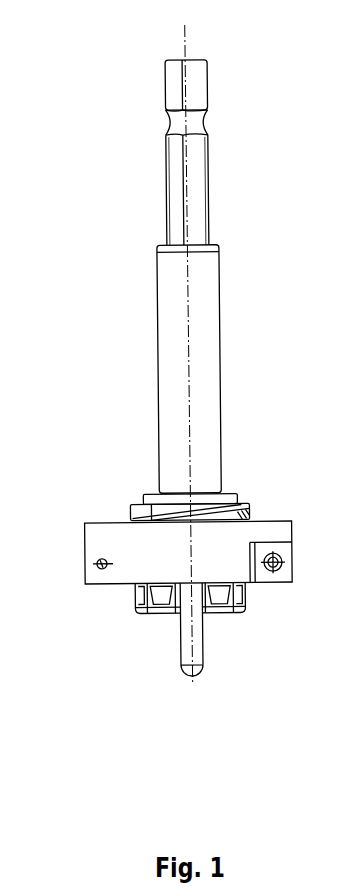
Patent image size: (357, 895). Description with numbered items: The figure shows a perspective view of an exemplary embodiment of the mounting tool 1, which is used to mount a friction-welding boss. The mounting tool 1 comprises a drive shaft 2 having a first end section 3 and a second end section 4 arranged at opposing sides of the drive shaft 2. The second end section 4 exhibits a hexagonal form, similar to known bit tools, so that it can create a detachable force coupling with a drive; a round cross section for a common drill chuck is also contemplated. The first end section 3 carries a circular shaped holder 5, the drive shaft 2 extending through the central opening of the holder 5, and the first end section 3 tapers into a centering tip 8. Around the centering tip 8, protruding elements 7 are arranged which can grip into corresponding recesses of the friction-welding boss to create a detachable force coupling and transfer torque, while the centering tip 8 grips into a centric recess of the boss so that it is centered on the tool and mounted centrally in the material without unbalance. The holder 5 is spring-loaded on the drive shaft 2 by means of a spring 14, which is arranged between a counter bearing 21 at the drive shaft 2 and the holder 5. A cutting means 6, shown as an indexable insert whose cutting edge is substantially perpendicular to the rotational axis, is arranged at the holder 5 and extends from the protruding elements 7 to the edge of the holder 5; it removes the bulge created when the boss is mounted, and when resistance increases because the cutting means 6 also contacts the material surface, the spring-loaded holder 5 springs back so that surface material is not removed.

The mounting tool 1 is at (88, 40).
The drive shaft 2 is at (165, 325).
The first end section 3 is at (66, 490).
The second end section 4 is at (229, 59).
The circular shaped holder 5 is at (285, 531).
The cutting means 6 is at (282, 576).
The protruding elements 7 is at (243, 606).
The centering tip 8 is at (198, 636).
The spring 14 is at (128, 498).
The counter bearing 21 is at (222, 493).